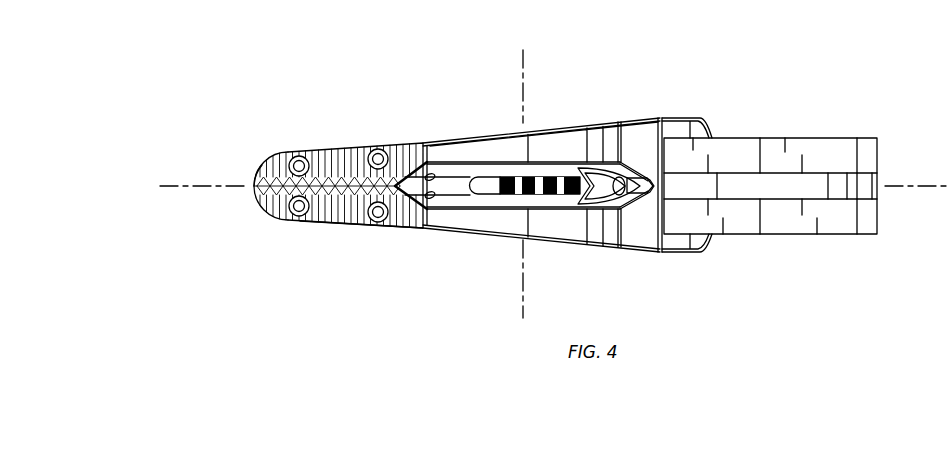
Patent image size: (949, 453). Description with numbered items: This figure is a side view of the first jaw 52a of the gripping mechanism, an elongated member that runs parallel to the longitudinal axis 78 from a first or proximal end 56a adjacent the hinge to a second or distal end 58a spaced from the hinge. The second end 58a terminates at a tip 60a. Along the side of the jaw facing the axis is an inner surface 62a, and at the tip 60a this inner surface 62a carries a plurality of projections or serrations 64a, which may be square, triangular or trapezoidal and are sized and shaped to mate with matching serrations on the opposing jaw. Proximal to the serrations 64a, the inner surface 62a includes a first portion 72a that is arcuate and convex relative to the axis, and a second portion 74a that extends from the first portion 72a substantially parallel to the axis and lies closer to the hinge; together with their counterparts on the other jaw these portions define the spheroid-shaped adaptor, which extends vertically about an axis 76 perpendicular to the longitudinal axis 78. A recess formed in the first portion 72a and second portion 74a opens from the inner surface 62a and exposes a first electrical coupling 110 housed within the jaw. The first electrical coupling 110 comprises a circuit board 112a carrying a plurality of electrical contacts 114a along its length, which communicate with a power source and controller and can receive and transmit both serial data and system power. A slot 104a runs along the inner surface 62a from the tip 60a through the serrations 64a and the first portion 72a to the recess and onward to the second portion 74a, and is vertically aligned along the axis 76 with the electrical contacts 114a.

The first jaw 52a is at (528, 166).
The first end 56a is at (868, 122).
The second end 58a is at (319, 178).
The tip 60a is at (260, 210).
The inner surface 62a is at (637, 122).
The serrations 64a is at (328, 222).
The first portion 72a is at (567, 134).
The second portion 74a is at (640, 244).
The vertical axis 76 is at (522, 63).
The longitudinal axis of the gripping mechanism 78 is at (928, 184).
The slot 104a is at (347, 182).
The first electrical coupling 110 is at (539, 234).
The circuit board 112a is at (519, 234).
The electrical contacts 114a is at (528, 195).